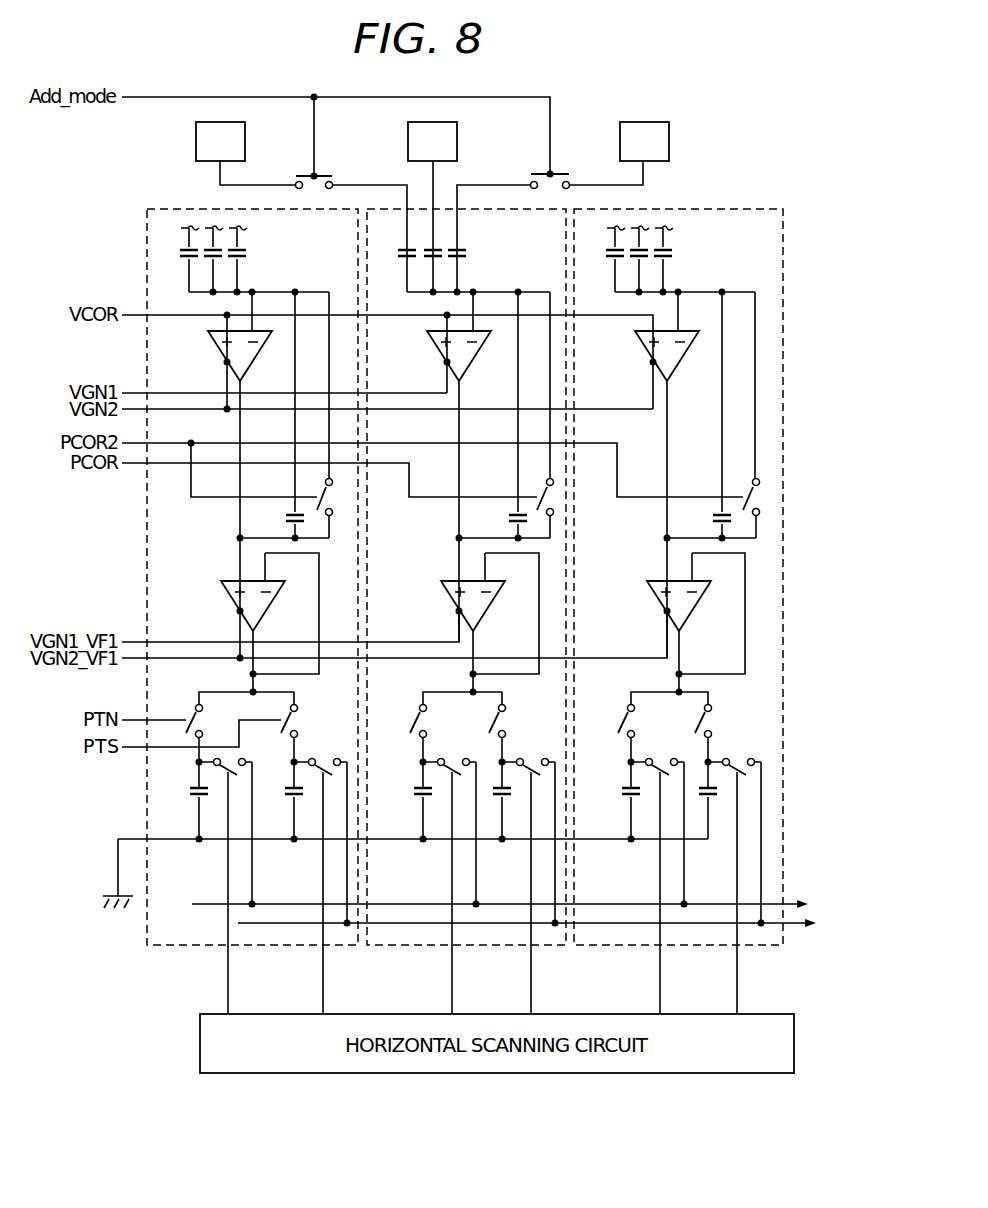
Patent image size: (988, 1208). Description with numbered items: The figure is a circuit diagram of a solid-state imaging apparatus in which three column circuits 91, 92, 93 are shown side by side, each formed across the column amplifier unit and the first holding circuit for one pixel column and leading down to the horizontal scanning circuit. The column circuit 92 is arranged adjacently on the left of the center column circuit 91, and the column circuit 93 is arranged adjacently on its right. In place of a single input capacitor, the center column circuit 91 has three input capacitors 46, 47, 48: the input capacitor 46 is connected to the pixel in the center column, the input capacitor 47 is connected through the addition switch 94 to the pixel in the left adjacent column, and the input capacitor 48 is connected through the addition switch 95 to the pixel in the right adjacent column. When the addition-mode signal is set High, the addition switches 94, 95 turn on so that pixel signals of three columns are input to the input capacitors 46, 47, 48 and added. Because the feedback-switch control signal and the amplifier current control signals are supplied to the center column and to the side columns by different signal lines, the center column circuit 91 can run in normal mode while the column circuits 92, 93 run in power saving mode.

The input capacitor 46 is at (438, 246).
The input capacitor 47 is at (403, 261).
The input capacitor 48 is at (470, 253).
The column circuit 91 is at (397, 947).
The column circuit 92 is at (162, 947).
The column circuit 93 is at (604, 947).
The addition switch 94 is at (320, 173).
The addition switch 95 is at (558, 172).